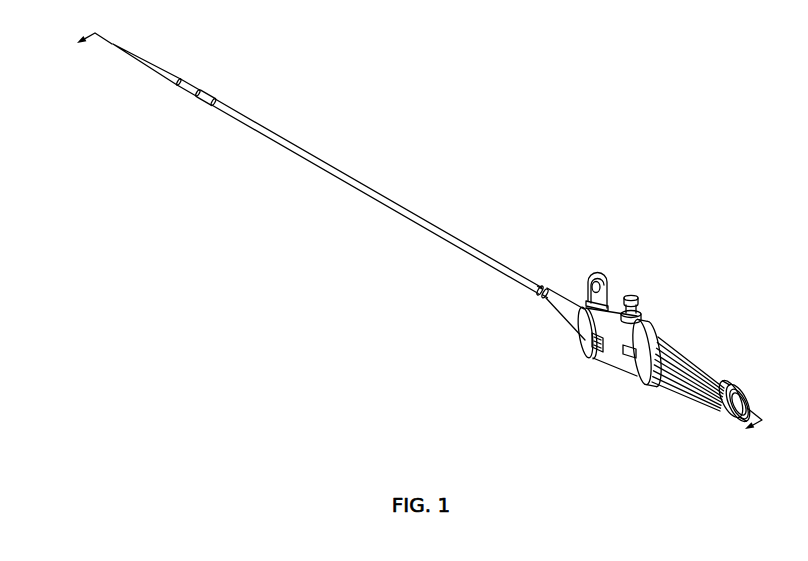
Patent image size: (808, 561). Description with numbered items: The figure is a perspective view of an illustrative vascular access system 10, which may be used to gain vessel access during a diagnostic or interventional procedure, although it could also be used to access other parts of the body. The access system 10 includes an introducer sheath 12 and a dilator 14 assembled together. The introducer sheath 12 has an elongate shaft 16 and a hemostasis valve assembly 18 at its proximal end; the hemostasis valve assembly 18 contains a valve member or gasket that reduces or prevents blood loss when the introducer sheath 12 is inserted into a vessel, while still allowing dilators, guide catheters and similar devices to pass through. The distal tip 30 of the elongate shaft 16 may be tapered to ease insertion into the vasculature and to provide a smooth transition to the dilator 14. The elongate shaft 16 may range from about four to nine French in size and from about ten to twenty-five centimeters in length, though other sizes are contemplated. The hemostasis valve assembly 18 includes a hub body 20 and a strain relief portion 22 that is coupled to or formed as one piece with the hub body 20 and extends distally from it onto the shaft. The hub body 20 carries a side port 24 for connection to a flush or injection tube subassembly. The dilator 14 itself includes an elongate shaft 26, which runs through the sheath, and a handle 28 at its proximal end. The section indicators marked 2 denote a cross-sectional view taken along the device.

The section line 2- 2 is at (410, 240).
The vascular access system 10 is at (432, 227).
The introducer sheath 12 is at (403, 178).
The dilator 14 is at (167, 50).
The elongate shaft 16 is at (441, 240).
The hemostasis valve assembly 18 is at (613, 260).
The hub body 20 is at (616, 354).
The strain relief portion 22 is at (550, 301).
The side port 24 is at (637, 306).
The elongate shaft 26 is at (171, 81).
The handle 28 is at (701, 374).
The distal tip 30 is at (199, 91).